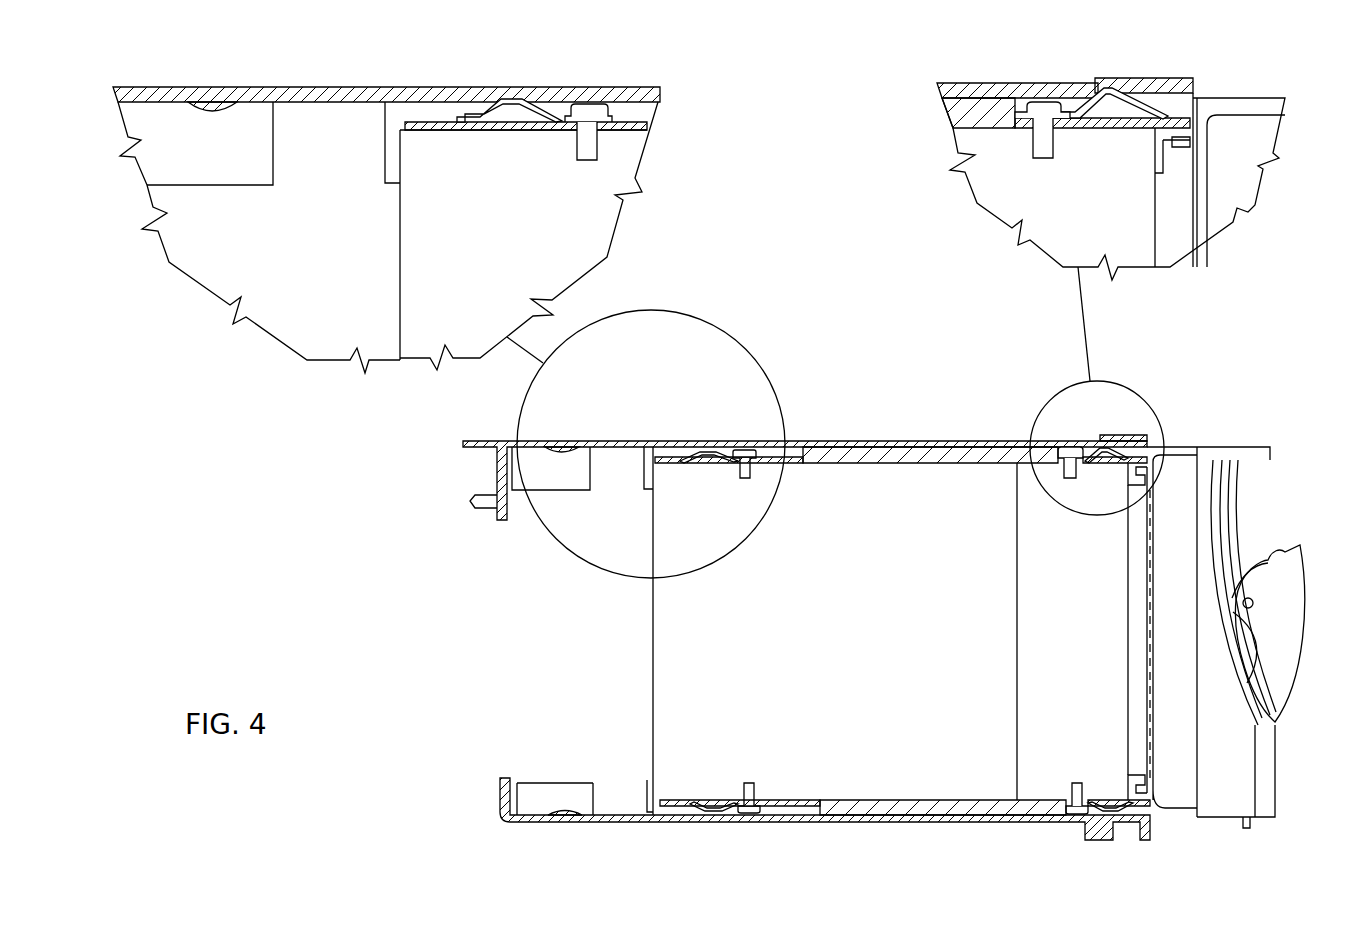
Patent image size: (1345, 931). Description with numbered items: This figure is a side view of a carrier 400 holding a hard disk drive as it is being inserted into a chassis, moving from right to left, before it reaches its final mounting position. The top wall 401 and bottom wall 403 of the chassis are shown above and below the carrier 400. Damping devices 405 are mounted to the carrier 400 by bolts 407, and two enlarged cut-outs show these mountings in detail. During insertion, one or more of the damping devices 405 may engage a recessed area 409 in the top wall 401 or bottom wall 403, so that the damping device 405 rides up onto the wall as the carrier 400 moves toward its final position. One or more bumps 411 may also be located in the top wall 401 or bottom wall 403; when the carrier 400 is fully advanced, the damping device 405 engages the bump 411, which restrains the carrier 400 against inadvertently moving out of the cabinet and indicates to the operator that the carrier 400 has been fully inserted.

The carrier 400 is at (1240, 771).
The top wall 401 is at (952, 90).
The bottom wall 403 is at (618, 822).
The damping device 405 is at (518, 105).
The bolt 407 is at (583, 147).
The recessed area 409 is at (1183, 93).
The bump 411 is at (214, 101).